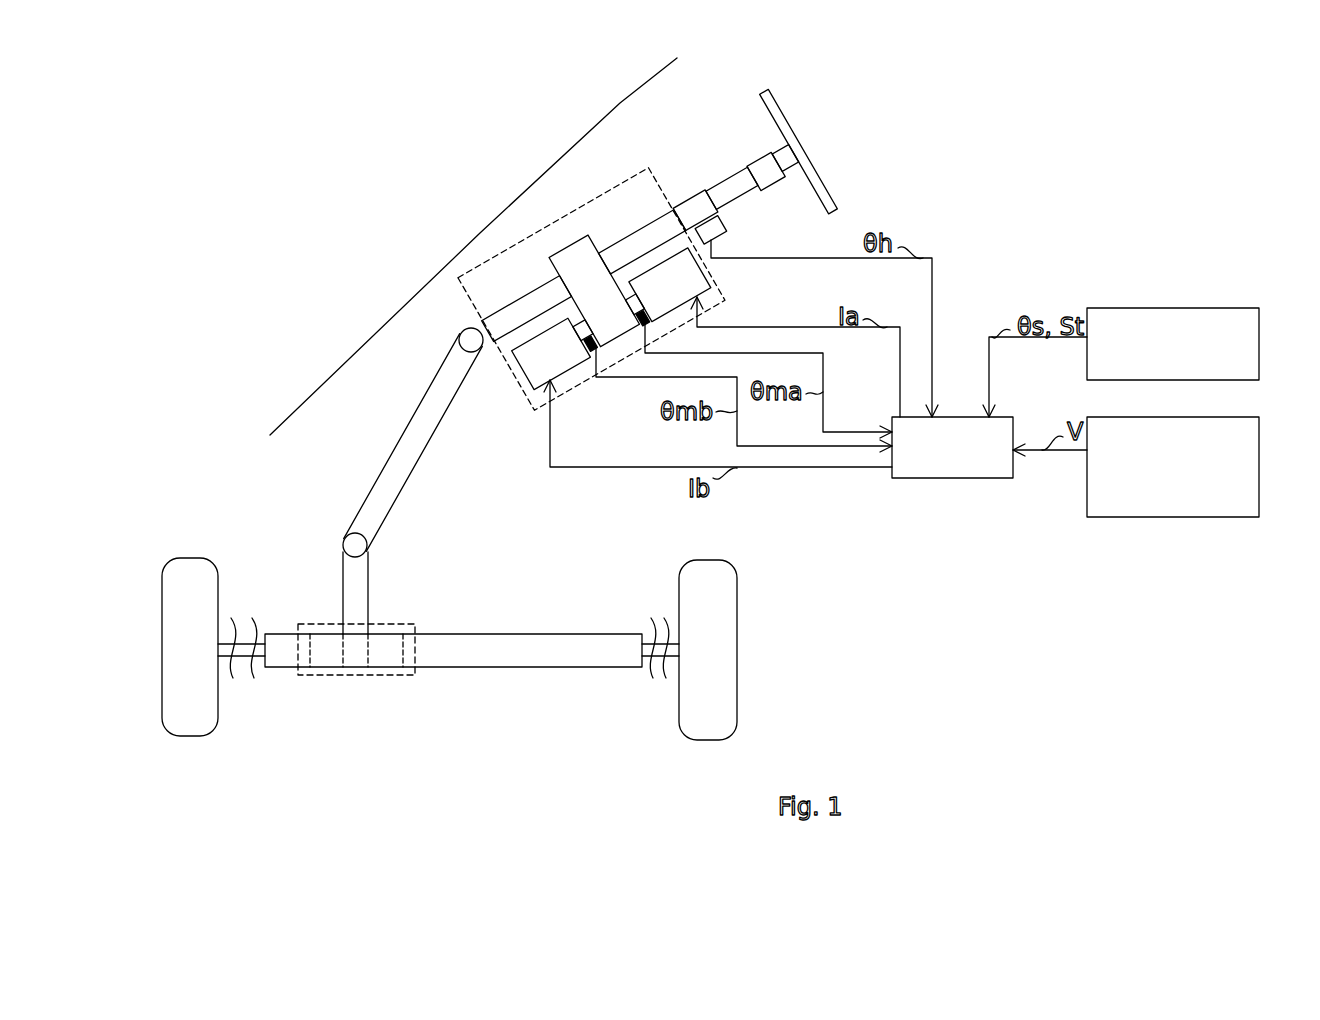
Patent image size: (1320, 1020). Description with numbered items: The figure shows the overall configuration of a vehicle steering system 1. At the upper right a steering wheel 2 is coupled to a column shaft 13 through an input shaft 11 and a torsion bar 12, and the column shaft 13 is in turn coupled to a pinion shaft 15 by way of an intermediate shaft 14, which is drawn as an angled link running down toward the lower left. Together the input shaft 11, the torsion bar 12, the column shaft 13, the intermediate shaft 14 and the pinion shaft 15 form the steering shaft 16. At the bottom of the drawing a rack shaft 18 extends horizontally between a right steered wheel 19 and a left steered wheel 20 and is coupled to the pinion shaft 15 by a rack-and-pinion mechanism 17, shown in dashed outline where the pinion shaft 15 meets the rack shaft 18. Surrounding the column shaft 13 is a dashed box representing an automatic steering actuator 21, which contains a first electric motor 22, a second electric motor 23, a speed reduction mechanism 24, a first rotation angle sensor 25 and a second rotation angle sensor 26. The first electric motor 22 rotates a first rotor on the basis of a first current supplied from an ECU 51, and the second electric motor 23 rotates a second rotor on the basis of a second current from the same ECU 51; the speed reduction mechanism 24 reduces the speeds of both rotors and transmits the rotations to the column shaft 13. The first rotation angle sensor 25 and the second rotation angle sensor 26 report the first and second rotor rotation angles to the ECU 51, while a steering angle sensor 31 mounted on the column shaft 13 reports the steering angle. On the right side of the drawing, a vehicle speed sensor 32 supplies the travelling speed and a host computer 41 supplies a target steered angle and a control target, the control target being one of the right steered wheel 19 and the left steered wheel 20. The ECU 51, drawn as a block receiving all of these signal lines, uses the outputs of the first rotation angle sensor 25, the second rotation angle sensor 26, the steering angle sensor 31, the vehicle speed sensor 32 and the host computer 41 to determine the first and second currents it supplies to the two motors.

The vehicle steering system 1 is at (1048, 117).
The steering wheel 2 is at (768, 108).
The input shaft 11 is at (757, 162).
The torsion bar 12 is at (717, 185).
The column shaft 13 is at (692, 193).
The intermediate shaft 14 is at (435, 390).
The pinion shaft 15 is at (345, 562).
The steering shaft 16 is at (474, 246).
The rack-and-pinion mechanism 17 is at (370, 676).
The rack shaft 18 is at (513, 664).
The right steered wheel 19 is at (190, 735).
The left steered wheel 20 is at (710, 738).
The automatic steering actuator 21 is at (708, 311).
The first electric motor 22 is at (704, 272).
The second electric motor 23 is at (528, 379).
The speed reduction mechanism 24 is at (549, 259).
The first rotation angle sensor 25 is at (647, 332).
The second rotation angle sensor 26 is at (597, 350).
The steering angle sensor 31 is at (729, 237).
The vehicle speed sensor 32 is at (1153, 518).
The host computer 41 is at (1150, 308).
The ECU 51 is at (955, 481).